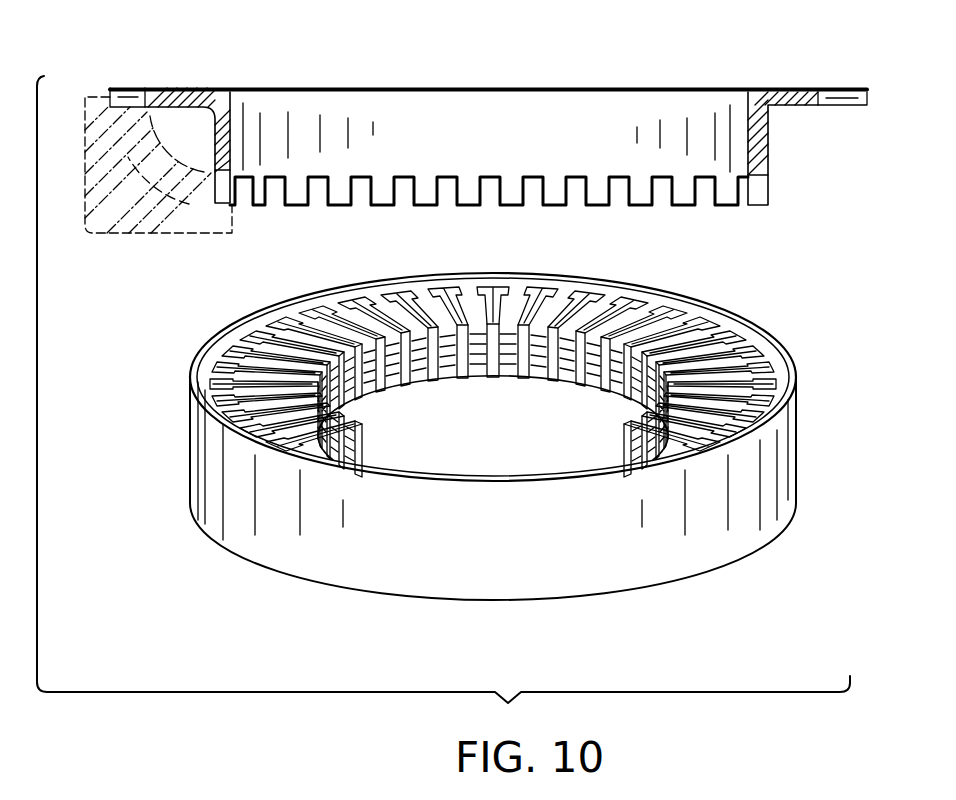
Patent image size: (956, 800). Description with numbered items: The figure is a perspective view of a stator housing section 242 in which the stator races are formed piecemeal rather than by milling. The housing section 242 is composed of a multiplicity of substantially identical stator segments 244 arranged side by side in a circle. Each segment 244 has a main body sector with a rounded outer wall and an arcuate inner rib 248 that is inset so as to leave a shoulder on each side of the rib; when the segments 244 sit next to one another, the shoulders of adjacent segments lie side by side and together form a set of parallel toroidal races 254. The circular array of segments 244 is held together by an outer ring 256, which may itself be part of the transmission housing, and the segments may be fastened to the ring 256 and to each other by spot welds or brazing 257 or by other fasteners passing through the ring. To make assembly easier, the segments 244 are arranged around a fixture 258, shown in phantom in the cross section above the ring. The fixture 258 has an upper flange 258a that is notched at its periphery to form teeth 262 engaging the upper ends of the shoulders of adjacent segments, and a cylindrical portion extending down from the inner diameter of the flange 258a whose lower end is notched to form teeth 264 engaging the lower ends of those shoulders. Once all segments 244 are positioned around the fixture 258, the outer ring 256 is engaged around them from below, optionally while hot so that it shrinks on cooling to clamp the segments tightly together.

The stator housing section 242 is at (797, 293).
The stator segments 244 is at (118, 231).
The arcuate inner rib 248 is at (323, 300).
The toroidal races 254 is at (262, 342).
The outer ring 256 is at (272, 568).
The spot welds or brazing 257 is at (763, 337).
The fixture 258 is at (230, 92).
The upper flange 258a is at (173, 88).
The teeth 262 is at (123, 97).
The teeth 264 is at (293, 206).